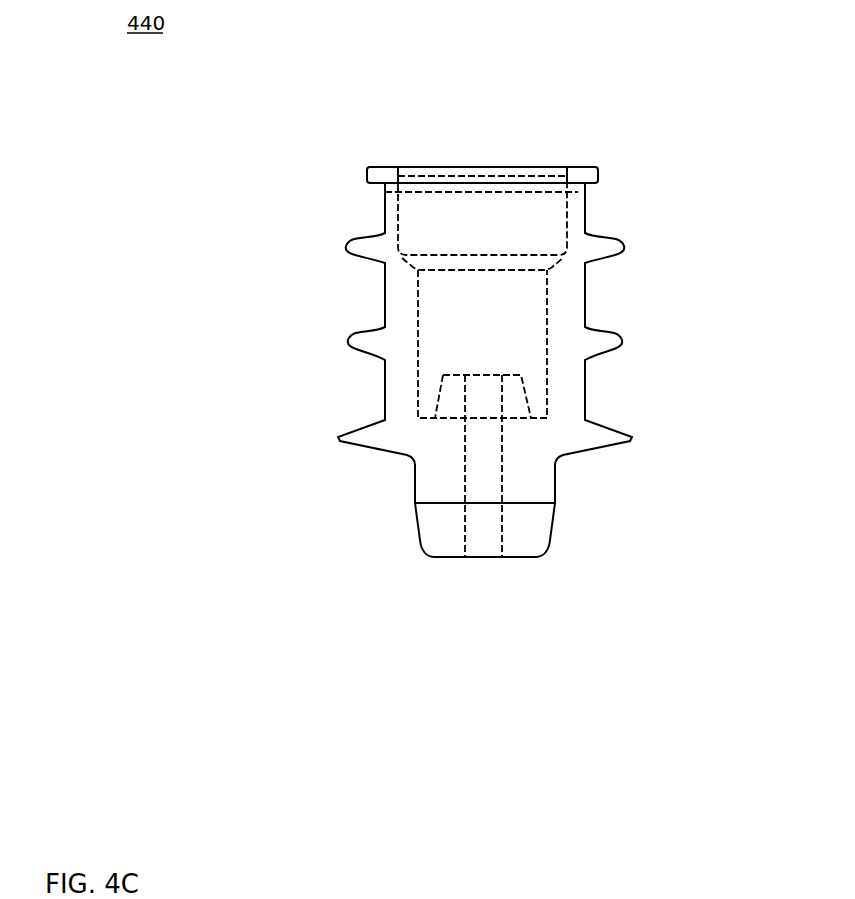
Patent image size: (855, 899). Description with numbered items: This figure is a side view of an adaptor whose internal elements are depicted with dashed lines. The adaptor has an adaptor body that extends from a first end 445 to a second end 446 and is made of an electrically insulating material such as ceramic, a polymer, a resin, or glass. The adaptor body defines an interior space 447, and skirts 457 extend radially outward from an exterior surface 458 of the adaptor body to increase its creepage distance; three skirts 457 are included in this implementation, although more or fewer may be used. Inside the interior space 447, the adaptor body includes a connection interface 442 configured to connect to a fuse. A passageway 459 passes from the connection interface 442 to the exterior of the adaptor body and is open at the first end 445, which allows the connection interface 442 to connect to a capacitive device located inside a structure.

The second end 446 is at (599, 175).
The interior space 447 is at (477, 320).
The exterior surface 458 is at (573, 300).
The skirts 457 is at (618, 340).
The connection interface 442 is at (512, 374).
The passageway 459 is at (490, 490).
The first end 445 is at (530, 553).